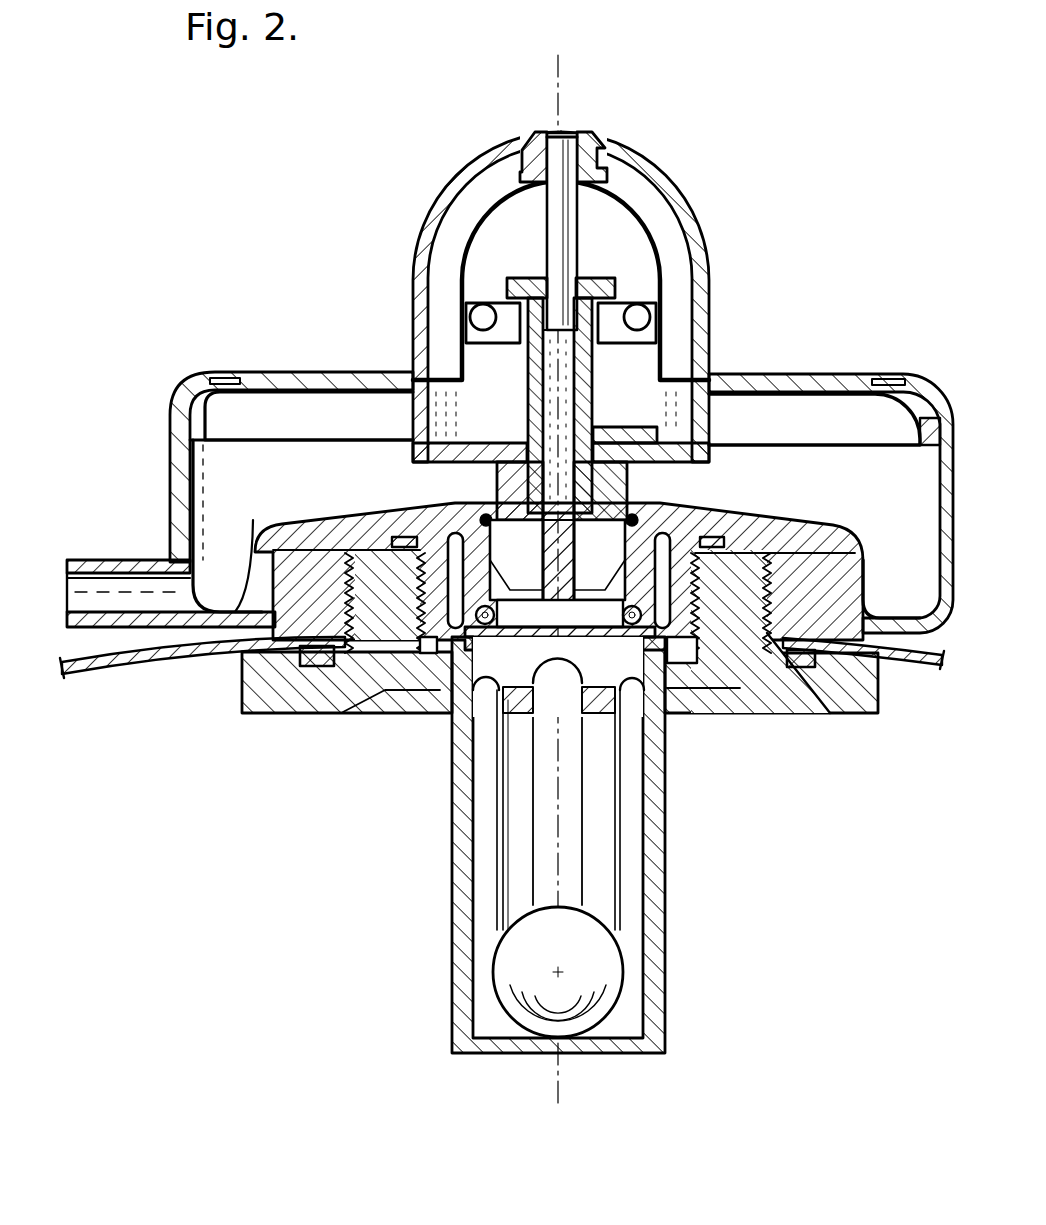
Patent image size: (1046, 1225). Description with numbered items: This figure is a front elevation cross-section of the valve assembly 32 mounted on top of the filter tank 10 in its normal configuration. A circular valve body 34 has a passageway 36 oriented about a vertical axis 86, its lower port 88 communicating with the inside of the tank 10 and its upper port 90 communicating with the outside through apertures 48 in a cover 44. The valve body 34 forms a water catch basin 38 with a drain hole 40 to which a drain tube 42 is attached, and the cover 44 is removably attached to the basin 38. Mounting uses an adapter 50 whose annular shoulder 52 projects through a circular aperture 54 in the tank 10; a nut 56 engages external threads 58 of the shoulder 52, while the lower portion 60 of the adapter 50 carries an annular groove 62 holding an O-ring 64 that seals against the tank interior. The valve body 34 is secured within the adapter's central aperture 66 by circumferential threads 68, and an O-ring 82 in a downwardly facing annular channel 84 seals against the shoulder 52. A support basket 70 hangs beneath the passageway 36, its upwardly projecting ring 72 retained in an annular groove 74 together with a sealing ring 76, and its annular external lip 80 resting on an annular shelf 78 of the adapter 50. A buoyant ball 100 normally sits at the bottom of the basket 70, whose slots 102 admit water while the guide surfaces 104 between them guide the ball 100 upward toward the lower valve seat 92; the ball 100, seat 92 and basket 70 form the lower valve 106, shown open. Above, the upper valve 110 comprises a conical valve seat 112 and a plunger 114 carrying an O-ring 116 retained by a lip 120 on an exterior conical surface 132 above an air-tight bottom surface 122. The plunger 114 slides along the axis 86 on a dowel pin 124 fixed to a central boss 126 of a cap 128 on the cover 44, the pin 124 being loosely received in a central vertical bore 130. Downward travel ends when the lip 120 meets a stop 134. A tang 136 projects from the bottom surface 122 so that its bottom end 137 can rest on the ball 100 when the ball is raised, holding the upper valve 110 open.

The tank 10 is at (106, 670).
The valve assembly 32 is at (314, 300).
The valve body 34 is at (694, 508).
The passageway 36 is at (528, 637).
The water catch basin 38 is at (178, 478).
The drain hole 40 is at (200, 590).
The drain tube 42 is at (125, 576).
The cover 44 is at (766, 374).
The apertures 48 is at (212, 372).
The adapter 50 is at (802, 722).
The annular shoulder 52 is at (748, 611).
The circular aperture 54 is at (338, 668).
The nut 56 is at (860, 580).
The external threads 58 is at (806, 560).
The lower portion of the adapter 60 is at (878, 714).
The annular groove 62 is at (312, 660).
The O-ring 64 is at (802, 667).
The central aperture 66 is at (404, 694).
The circumferential threads 68 is at (482, 602).
The support basket 70 is at (662, 885).
The ring 72 is at (680, 692).
The annular groove 74 is at (708, 512).
The sealing ring 76 is at (612, 650).
The annular shelf 78 is at (441, 700).
The annular external lip 80 is at (425, 708).
The O-ring 82 is at (400, 538).
The annular channel 84 is at (720, 541).
The vertical axis 86 is at (572, 101).
The lower port 88 is at (576, 690).
The upper port 90 is at (702, 486).
The lower valve seat 92 is at (483, 602).
The ball 100 is at (548, 957).
The slots 102 is at (633, 926).
The guide surfaces 104 is at (606, 840).
The lower valve 106 is at (450, 852).
The upper valve 110 is at (722, 330).
The conical valve seat 112 is at (516, 560).
The plunger 114 is at (537, 382).
The O-ring 116 is at (481, 517).
The lip 120 is at (599, 560).
The bottom surface 122 is at (556, 524).
The dowel pin 124 is at (577, 238).
The central boss 126 is at (600, 171).
The cap 128 is at (707, 258).
The central vertical bore 130 is at (572, 376).
The exterior conical surface 132 is at (520, 515).
The stop 134 is at (585, 628).
The tang 136 is at (556, 660).
The bottom end 137 is at (506, 676).